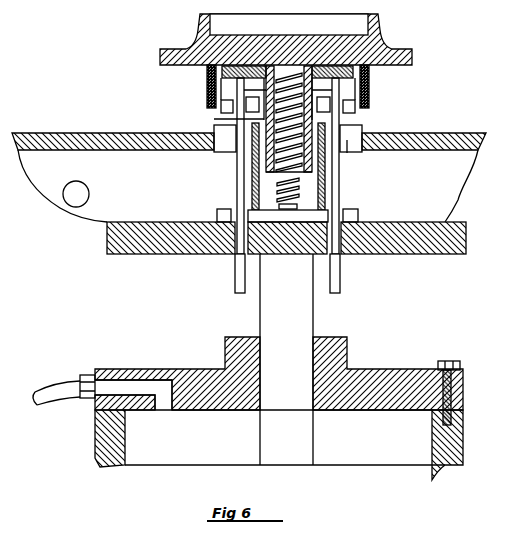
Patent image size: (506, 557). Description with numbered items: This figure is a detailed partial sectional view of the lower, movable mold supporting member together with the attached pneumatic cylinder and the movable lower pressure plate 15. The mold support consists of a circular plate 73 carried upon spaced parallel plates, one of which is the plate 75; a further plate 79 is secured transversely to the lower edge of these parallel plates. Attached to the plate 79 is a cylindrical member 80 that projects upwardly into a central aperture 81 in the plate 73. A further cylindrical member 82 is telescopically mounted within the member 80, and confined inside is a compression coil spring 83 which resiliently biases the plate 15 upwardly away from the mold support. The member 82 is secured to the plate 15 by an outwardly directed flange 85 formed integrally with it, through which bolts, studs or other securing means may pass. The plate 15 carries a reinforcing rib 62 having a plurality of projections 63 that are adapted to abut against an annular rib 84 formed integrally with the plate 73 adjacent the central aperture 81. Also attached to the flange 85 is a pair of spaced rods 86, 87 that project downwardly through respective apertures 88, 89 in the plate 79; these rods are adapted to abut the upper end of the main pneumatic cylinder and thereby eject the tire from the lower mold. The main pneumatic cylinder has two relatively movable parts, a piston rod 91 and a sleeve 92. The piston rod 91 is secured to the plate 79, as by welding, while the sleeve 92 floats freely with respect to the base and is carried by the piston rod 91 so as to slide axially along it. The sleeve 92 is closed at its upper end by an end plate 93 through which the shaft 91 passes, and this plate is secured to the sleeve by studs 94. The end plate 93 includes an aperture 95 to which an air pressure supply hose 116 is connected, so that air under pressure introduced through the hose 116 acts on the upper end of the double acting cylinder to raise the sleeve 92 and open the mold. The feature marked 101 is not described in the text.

The lower plate 15 is at (388, 54).
The reinforcing rib 62 is at (207, 89).
The projections 63 is at (219, 108).
The circular plate 73 is at (455, 142).
The parallel plate 75 is at (452, 185).
The plate 79 is at (384, 254).
The cylindrical member 80 is at (325, 180).
The central aperture 81 is at (351, 156).
The cylindrical member 82 is at (312, 120).
The compression coil spring 83 is at (290, 179).
The annular rib 84 is at (214, 130).
The outwardly directed flange 85 is at (330, 82).
The rod 86 is at (337, 172).
The rod 87 is at (240, 181).
The aperture 88 is at (349, 222).
The aperture 89 is at (235, 257).
The piston rod 91 is at (313, 318).
The sleeve 92 is at (456, 426).
The end plate 93 is at (378, 372).
The studs 94 is at (455, 364).
The aperture 95 is at (153, 388).
The port 101 is at (76, 189).
The air pressure supply hose 116 is at (46, 392).